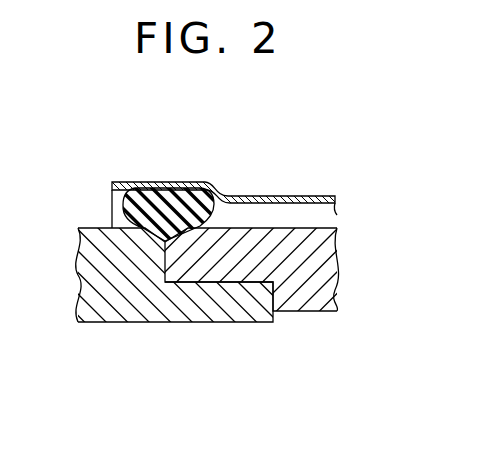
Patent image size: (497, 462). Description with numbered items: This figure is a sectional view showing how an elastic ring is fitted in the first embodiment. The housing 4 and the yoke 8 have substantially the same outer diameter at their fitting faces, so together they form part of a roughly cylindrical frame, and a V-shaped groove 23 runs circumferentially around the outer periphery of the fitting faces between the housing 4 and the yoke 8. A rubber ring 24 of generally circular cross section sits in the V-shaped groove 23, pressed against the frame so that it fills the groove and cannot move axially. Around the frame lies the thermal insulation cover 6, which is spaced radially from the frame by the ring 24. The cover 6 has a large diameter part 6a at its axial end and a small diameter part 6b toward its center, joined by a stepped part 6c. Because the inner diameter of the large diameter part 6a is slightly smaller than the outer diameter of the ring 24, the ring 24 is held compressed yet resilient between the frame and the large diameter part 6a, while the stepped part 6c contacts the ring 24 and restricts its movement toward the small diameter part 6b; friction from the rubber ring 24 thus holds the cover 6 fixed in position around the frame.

The housing 4 is at (93, 262).
The yoke 8 is at (327, 250).
The thermal insulation cover 6 is at (317, 194).
The large diameter part 6a is at (168, 181).
The small diameter part 6b is at (278, 196).
The stepped part 6c is at (222, 193).
The V-shaped groove 23 is at (177, 235).
The rubber ring 24 is at (112, 191).